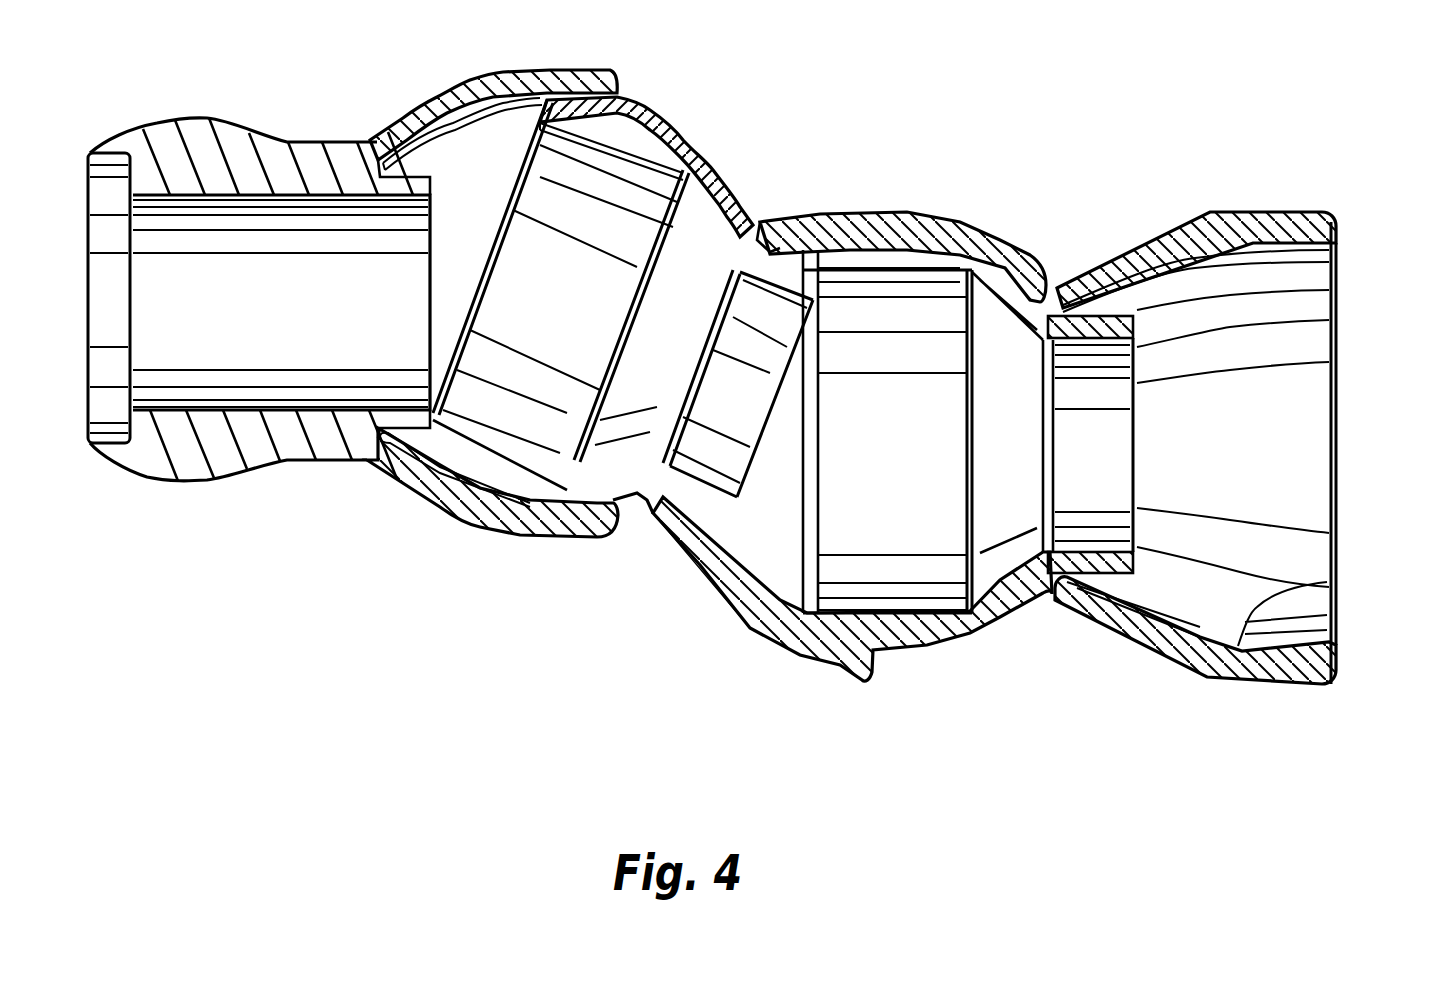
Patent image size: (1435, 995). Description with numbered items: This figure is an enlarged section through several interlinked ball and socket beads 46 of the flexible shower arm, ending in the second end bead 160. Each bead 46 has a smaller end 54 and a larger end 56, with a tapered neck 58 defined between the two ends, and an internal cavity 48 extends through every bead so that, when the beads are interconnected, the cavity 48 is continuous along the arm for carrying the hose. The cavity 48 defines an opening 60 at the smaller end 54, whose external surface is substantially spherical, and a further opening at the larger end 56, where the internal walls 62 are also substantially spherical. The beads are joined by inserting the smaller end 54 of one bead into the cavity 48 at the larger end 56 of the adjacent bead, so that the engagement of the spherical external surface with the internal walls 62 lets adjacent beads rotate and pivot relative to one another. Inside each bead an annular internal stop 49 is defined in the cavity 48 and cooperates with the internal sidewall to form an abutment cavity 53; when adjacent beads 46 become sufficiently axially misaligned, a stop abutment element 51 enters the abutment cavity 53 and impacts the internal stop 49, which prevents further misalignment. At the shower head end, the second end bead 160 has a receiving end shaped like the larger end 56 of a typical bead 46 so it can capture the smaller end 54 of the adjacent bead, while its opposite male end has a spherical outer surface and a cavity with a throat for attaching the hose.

The second end bead 160 is at (190, 480).
The opening 60 is at (482, 170).
The smaller end 54 is at (643, 117).
The tapered neck 58 is at (753, 227).
The internal stop 49 is at (802, 230).
The stop abutment element 51 is at (837, 230).
The ball and socket bead 46 is at (922, 210).
The larger end 56 is at (950, 213).
The abutment cavity 53 is at (670, 527).
The internal cavity 48 is at (1003, 237).
The internal walls 62 is at (1337, 585).